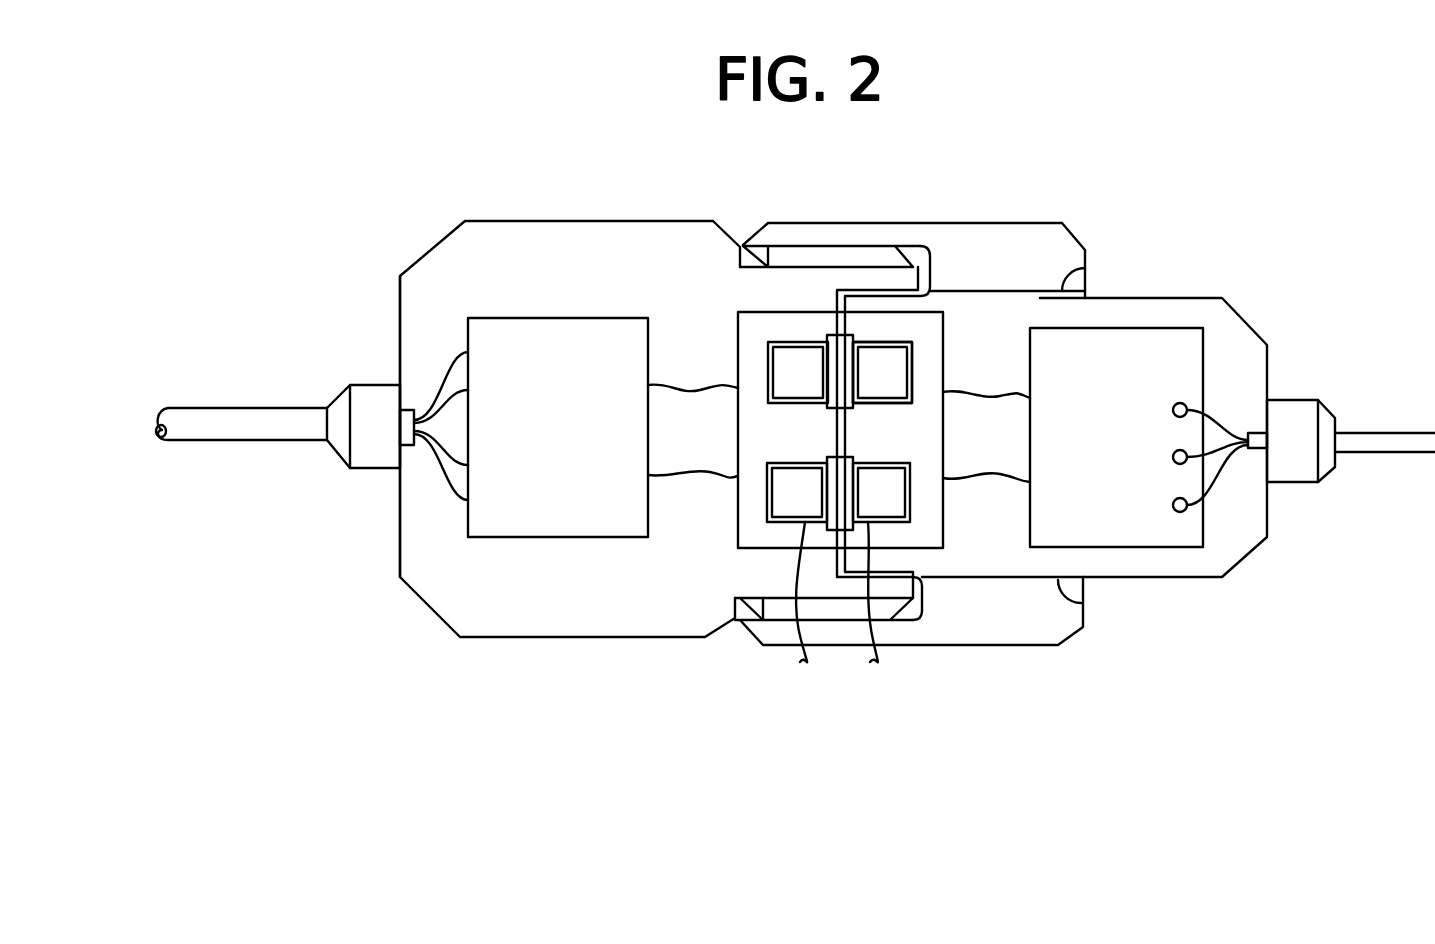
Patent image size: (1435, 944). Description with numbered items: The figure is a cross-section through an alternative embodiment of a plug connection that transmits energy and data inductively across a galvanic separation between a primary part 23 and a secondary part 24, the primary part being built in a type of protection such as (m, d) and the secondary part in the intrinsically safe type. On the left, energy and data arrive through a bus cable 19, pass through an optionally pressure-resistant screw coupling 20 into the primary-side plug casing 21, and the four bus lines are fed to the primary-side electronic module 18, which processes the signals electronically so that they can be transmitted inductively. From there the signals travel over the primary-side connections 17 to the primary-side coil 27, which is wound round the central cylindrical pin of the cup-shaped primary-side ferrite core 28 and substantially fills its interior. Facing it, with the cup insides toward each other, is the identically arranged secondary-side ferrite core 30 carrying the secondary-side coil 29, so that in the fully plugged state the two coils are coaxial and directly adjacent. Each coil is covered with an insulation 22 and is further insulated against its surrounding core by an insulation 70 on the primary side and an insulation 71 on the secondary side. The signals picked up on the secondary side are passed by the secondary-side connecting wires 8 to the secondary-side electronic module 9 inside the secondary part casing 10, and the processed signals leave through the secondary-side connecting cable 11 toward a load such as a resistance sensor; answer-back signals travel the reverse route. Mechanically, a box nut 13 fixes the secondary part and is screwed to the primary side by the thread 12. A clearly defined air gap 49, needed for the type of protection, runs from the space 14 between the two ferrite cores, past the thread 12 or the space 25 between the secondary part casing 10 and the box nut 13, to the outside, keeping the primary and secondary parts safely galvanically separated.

The secondary-side connecting wires 8 is at (978, 476).
The secondary-side electronic module 9 is at (1100, 404).
The secondary part casing 10 is at (1213, 531).
The secondary-side connecting cable 11 is at (1386, 432).
The thread 12 is at (797, 246).
The box nut 13 is at (975, 268).
The space 14 is at (836, 290).
The primary-side connections 17 is at (687, 393).
The primary-side electronic module 18 is at (530, 404).
The bus cable 19 is at (217, 432).
The screw coupling 20 is at (360, 453).
The primary-side plug casing 21 is at (418, 581).
The insulation 22 is at (847, 457).
The primary part 23 is at (553, 217).
The secondary part 24 is at (1210, 295).
The space 25 is at (1086, 272).
The primary-side coil 27 is at (800, 612).
The primary-side ferrite core 28 is at (752, 446).
The secondary-side coil 29 is at (870, 612).
The secondary-side ferrite core 30 is at (903, 436).
The air gap 49 is at (915, 575).
The insulation 70 is at (768, 352).
The insulation 71 is at (912, 355).